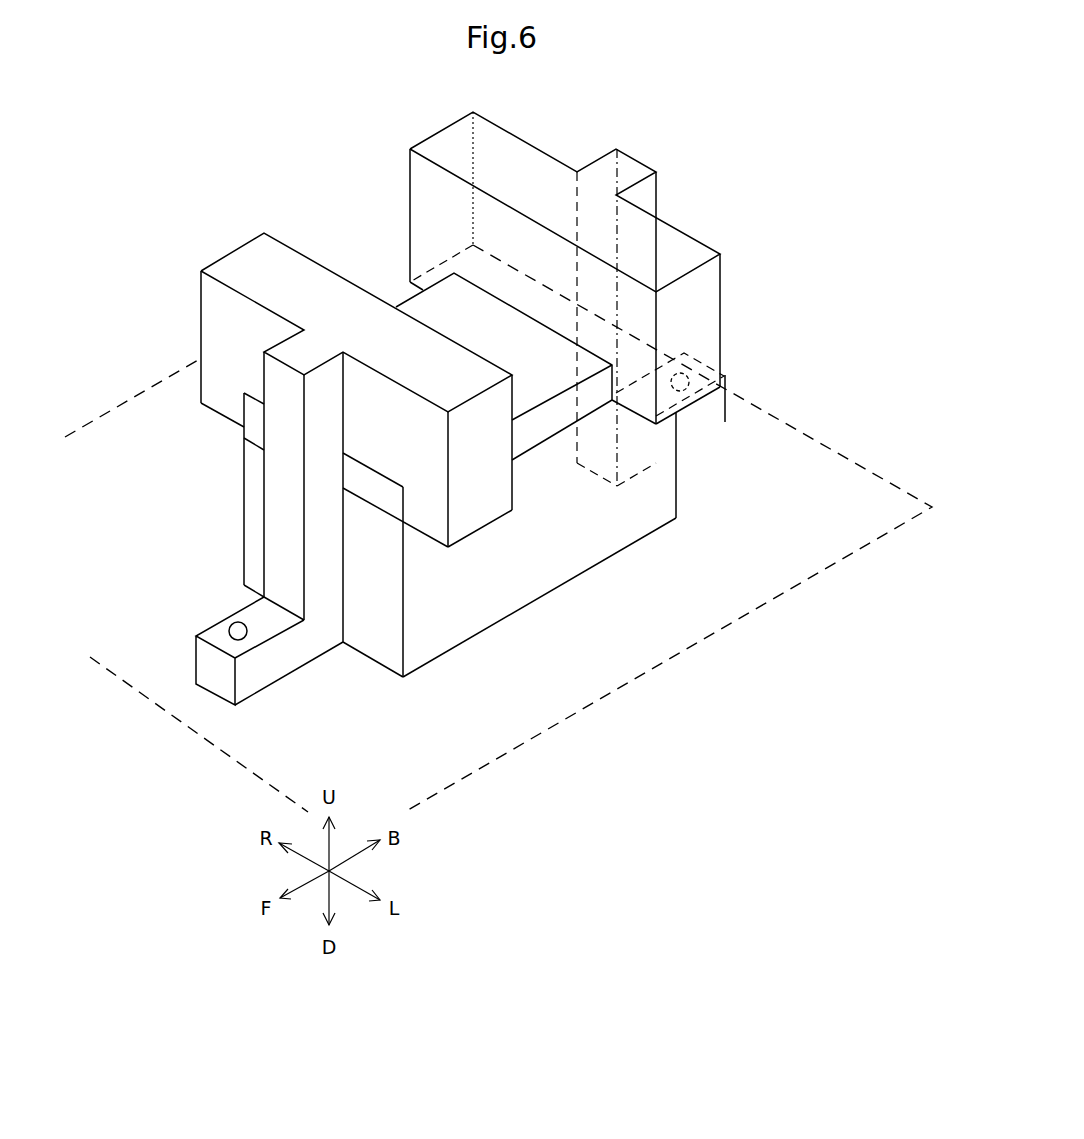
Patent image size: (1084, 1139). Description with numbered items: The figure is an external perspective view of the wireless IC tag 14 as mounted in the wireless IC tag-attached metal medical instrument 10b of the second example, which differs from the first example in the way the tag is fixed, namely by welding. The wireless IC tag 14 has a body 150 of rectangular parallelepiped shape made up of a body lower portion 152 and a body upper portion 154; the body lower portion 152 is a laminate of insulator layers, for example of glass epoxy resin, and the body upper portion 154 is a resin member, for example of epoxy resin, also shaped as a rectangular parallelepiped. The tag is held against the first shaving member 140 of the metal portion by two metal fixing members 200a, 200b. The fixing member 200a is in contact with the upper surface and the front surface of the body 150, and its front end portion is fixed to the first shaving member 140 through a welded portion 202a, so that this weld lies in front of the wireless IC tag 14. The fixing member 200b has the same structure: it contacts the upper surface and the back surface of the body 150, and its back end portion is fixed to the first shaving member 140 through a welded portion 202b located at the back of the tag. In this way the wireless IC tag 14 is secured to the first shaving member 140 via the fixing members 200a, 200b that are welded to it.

The wireless IC tag-attached metal medical instrument 10b is at (243, 214).
The fixing member 200a is at (199, 345).
The fixing member 200b is at (683, 232).
The welded portion 202a is at (228, 624).
The welded portion 202b is at (722, 358).
The wireless IC tag 14 is at (235, 488).
The body 150 is at (775, 497).
The body upper portion 154 is at (567, 411).
The body lower portion 152 is at (563, 522).
The first shaving member 140 is at (592, 633).